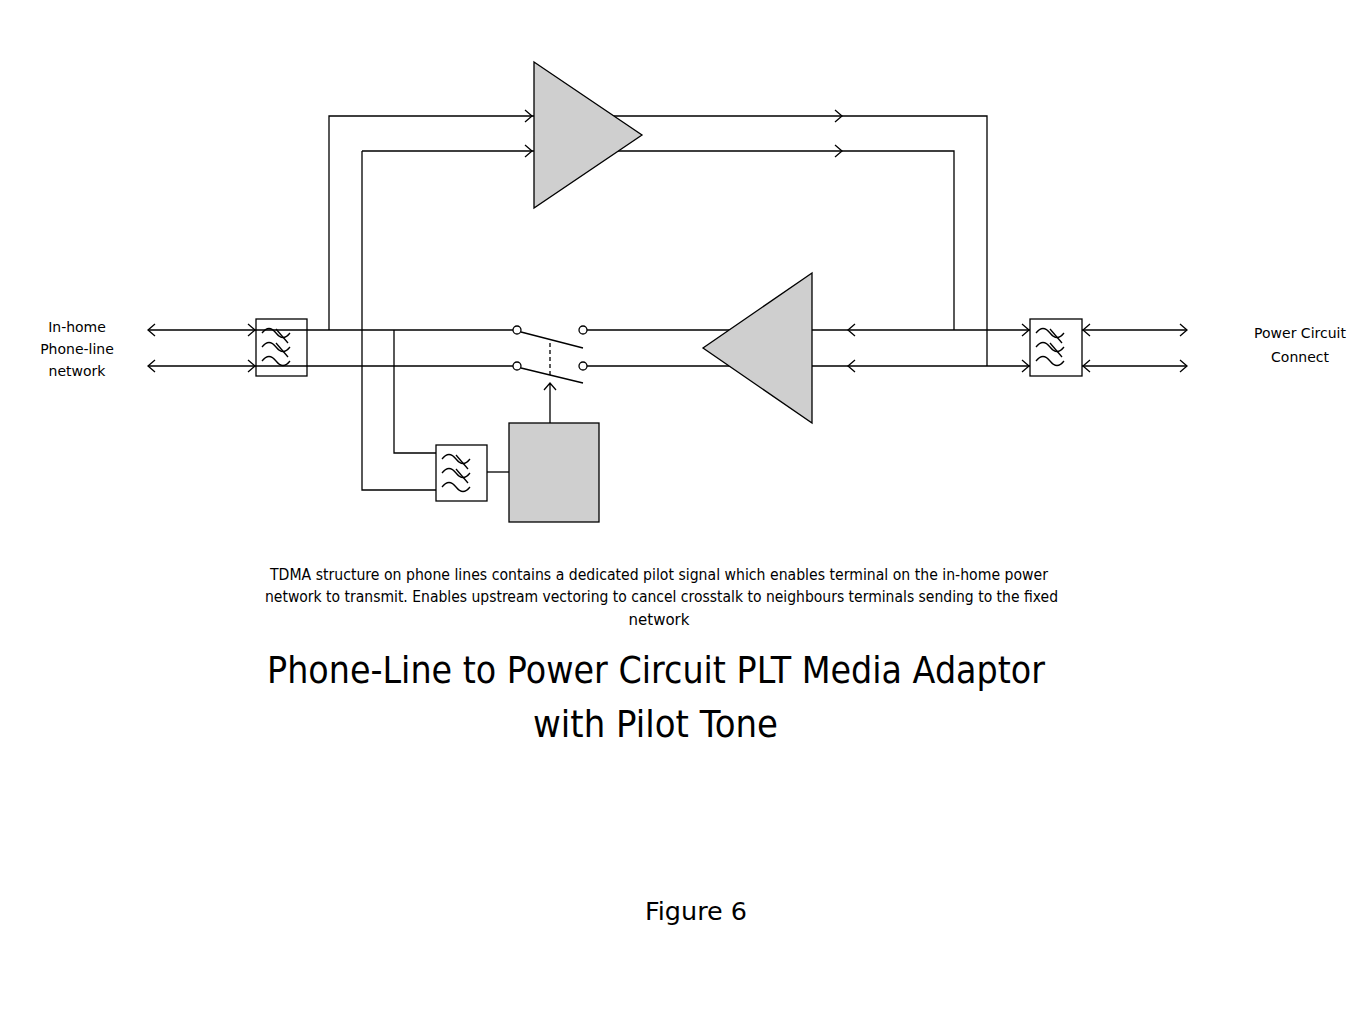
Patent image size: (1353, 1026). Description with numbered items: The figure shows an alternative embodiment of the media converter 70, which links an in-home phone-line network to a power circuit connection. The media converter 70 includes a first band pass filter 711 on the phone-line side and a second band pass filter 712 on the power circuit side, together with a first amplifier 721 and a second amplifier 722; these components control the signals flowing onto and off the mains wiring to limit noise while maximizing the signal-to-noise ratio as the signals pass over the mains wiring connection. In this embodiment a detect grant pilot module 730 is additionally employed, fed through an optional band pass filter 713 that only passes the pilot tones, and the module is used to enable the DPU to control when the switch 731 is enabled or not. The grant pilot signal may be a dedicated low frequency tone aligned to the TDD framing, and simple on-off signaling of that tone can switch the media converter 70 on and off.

The media converter 70 is at (910, 58).
The first band pass filter 711 is at (290, 318).
The second band pass filter 712 is at (1062, 318).
The pilot filter 713 is at (462, 445).
The first amplifier 721 is at (588, 96).
The second amplifier 722 is at (782, 294).
The detect grant pilot module 730 is at (600, 480).
The switch 731 is at (558, 322).